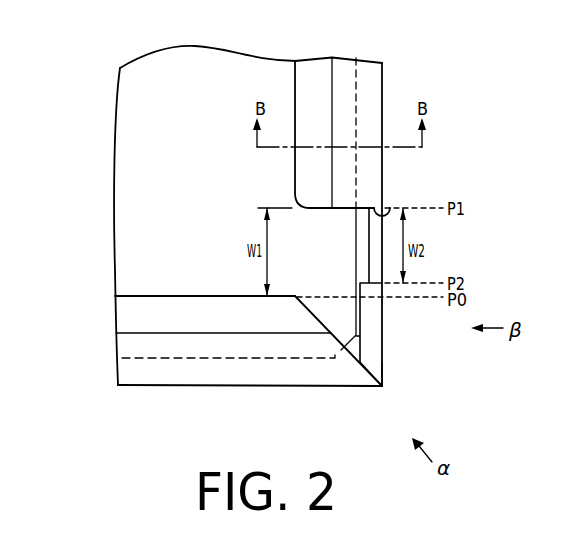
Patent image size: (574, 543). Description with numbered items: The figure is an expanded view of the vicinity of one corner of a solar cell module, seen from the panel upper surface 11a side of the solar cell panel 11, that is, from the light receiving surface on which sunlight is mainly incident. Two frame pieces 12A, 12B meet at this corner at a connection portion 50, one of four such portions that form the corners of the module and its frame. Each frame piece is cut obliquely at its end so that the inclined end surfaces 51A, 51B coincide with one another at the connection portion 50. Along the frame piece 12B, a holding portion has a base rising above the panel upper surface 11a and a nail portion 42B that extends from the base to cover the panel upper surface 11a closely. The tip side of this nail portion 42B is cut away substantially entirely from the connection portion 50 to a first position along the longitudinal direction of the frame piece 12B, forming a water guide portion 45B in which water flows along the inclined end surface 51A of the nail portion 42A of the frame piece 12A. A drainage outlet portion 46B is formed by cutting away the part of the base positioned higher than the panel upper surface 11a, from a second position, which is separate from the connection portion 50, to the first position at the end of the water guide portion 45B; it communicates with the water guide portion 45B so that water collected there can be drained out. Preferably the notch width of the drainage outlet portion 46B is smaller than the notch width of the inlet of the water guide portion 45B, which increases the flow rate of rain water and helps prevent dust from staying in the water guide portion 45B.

The solar cell panel 11 is at (126, 121).
The panel upper surface 11a is at (187, 120).
The frame piece 12A is at (155, 388).
The frame piece 12B is at (385, 82).
The nail portion 42A is at (128, 348).
The nail portion 42B is at (344, 65).
The water guide portion 45B is at (347, 315).
The drainage outlet portion 46B is at (390, 208).
The connection portion 50 is at (383, 386).
The inclined end surface 51A is at (311, 303).
The inclined end surface 51B is at (366, 382).